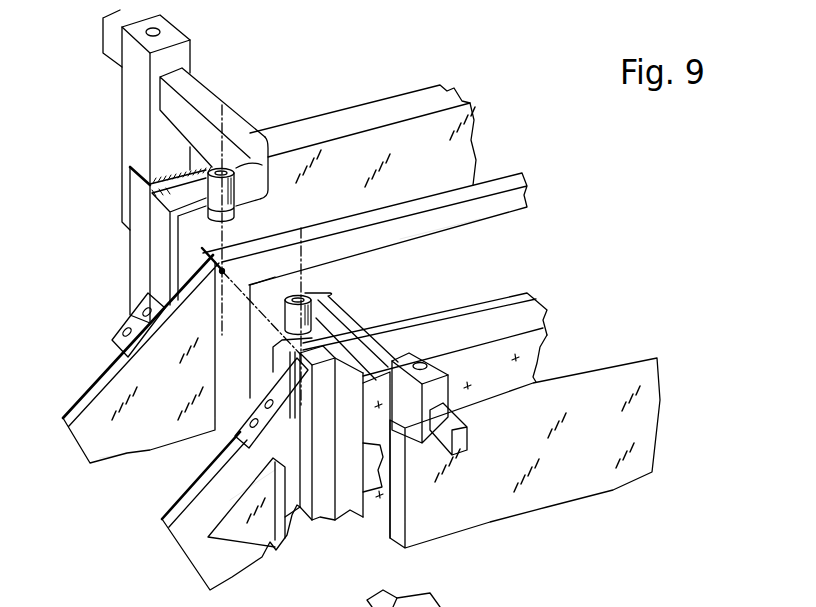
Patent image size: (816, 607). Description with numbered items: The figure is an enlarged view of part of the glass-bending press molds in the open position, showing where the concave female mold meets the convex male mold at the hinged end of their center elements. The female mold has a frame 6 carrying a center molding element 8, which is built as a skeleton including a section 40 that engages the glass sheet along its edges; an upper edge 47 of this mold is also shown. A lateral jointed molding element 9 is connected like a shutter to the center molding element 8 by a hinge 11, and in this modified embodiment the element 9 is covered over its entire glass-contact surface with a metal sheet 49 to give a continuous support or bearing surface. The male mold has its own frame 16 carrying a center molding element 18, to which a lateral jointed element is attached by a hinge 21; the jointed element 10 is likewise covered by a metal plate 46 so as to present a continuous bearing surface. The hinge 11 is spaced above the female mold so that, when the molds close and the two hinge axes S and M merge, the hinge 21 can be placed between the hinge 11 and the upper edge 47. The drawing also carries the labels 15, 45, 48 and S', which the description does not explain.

The frame 6 is at (338, 122).
The center molding element 8 is at (497, 168).
The lateral jointed molding element 9 is at (91, 381).
The jointed element 10 is at (197, 557).
The hinge 11 is at (207, 170).
The lever arm 15 is at (197, 103).
The frame 16 is at (567, 493).
The center molding element 18 is at (518, 288).
The hinge 21 is at (335, 293).
The section 40 is at (507, 185).
The backing plate 45 is at (528, 355).
The metal plate 46 is at (253, 543).
The upper edge 47 is at (255, 246).
The rail lower edge 48 is at (443, 223).
The metal sheet 49 is at (127, 452).
The axis M is at (223, 108).
The axis S is at (261, 324).
The pivot axis S' is at (325, 316).